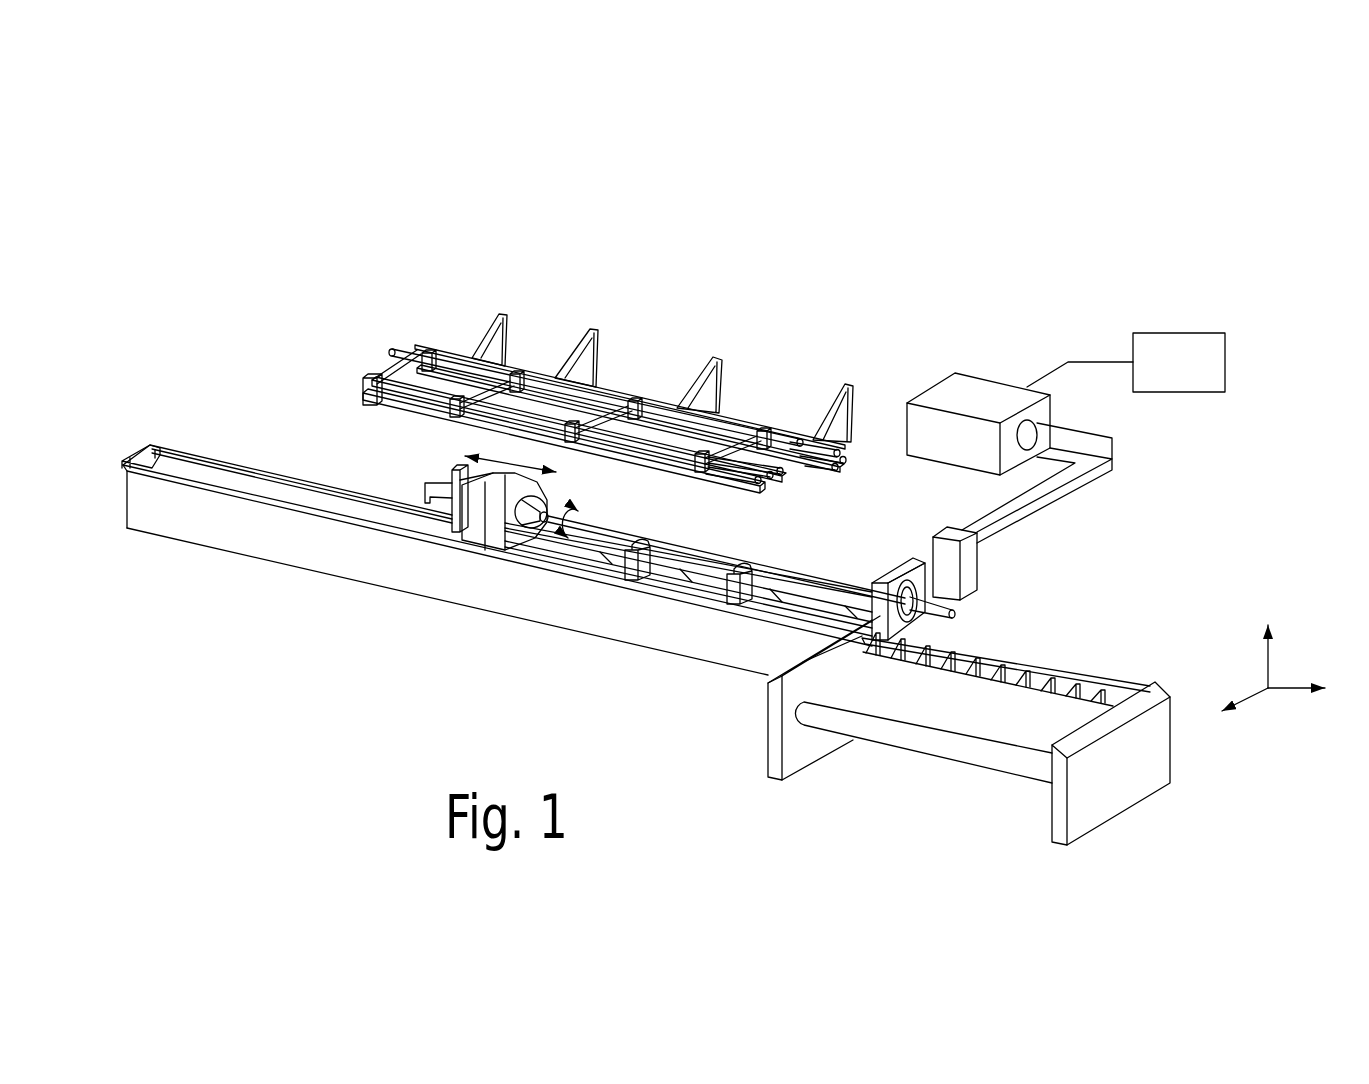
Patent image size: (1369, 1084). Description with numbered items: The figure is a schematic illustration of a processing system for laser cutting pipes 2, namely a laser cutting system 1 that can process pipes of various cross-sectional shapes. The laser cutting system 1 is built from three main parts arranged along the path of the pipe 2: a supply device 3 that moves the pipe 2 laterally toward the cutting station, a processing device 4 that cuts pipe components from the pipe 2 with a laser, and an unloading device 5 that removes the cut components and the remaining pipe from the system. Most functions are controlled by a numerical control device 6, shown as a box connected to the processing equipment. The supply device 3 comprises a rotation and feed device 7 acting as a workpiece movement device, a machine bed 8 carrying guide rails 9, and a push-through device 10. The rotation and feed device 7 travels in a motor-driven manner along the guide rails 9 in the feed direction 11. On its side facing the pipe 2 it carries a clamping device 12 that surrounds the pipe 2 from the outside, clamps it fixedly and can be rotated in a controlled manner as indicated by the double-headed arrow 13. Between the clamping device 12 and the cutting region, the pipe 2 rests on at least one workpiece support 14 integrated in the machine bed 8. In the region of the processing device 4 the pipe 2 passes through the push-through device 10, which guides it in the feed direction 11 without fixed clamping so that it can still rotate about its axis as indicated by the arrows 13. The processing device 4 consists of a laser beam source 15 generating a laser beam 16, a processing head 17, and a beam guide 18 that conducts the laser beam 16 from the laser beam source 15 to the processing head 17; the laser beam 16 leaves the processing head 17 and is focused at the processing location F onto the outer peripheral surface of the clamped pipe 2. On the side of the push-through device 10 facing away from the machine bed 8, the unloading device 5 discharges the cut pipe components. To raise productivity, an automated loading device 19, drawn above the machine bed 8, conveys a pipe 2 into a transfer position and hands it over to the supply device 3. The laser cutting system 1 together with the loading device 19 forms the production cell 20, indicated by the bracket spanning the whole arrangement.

The laser cutting system 1 is at (966, 298).
The pipe 2 is at (806, 577).
The supply device 3 is at (273, 320).
The processing device 4 is at (897, 318).
The unloading device 5 is at (975, 794).
The numerical control device 6 is at (1178, 366).
The rotation and feed device 7 is at (500, 490).
The machine bed 8 is at (182, 513).
The guide rails 9 is at (150, 462).
The push-through device 10 is at (883, 610).
The feed direction 11 is at (505, 460).
The clamping device 12 is at (527, 527).
The double-headed arrow 13 is at (574, 508).
The workpiece support 14 is at (720, 600).
The laser beam source 15 is at (977, 388).
The laser beam 16 is at (1093, 473).
The processing head 17 is at (972, 560).
The beam guide 18 is at (1053, 507).
The loading device 19 is at (666, 332).
The production cell 20 is at (125, 180).
The processing location F is at (937, 623).